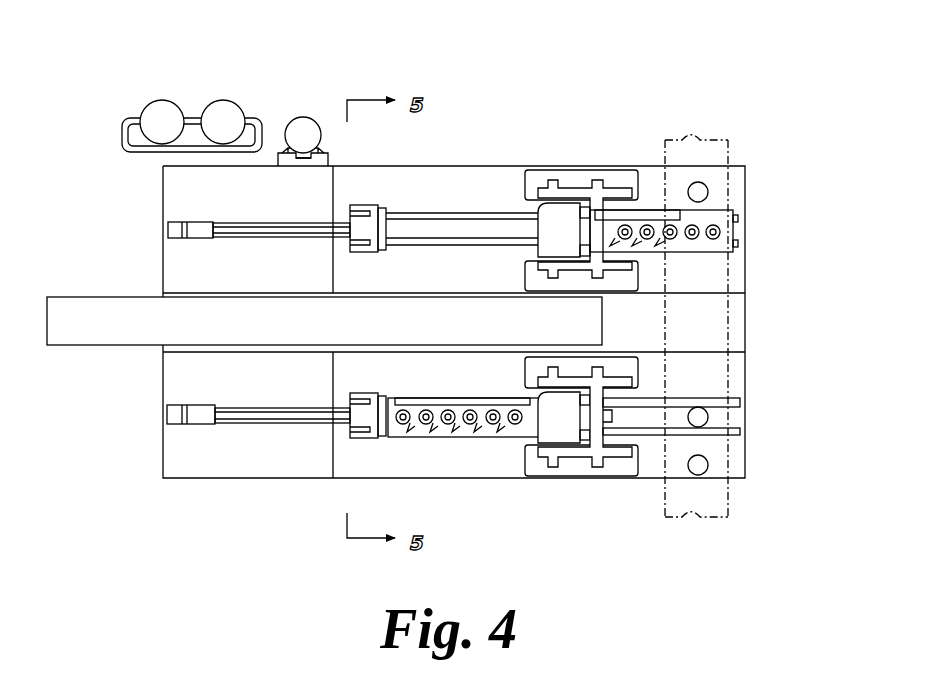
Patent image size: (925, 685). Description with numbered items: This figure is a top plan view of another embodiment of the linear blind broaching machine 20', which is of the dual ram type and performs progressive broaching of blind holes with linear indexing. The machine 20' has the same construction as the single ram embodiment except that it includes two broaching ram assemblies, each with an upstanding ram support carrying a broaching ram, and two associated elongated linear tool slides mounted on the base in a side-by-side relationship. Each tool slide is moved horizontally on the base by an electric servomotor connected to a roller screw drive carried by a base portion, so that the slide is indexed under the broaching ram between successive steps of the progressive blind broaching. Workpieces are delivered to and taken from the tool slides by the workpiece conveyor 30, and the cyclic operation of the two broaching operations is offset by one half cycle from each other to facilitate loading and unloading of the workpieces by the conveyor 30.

The linear blind broaching machine 20' is at (418, 254).
The workpiece conveyor 30 is at (735, 140).